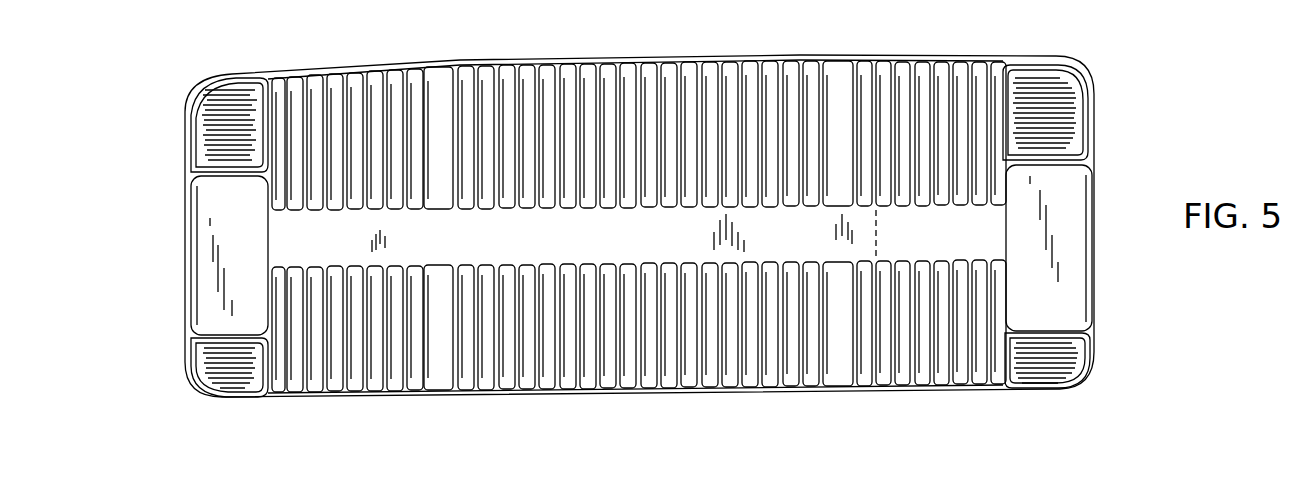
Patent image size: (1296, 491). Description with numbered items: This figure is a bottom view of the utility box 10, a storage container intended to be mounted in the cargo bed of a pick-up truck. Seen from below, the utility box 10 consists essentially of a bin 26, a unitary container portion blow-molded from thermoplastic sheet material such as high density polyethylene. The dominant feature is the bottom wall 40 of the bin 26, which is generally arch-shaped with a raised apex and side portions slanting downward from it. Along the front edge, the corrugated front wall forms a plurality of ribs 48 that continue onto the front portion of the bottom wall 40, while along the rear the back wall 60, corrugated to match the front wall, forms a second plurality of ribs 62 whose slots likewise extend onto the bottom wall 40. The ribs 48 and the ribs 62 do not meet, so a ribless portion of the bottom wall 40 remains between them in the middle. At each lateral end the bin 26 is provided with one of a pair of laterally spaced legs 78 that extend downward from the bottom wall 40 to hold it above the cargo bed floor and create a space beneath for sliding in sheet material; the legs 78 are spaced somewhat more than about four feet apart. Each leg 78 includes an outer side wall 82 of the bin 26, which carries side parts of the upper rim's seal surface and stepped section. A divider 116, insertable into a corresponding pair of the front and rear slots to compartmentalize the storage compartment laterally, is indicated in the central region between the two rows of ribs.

The utility box 10 is at (1122, 84).
The bin 26 is at (918, 48).
The bottom wall 40 is at (565, 398).
The ribs 48 is at (505, 74).
The back wall 60 is at (650, 400).
The ribs 62 is at (393, 394).
The legs 78 is at (188, 284).
The side wall 82 is at (186, 172).
The divider 116 is at (881, 233).